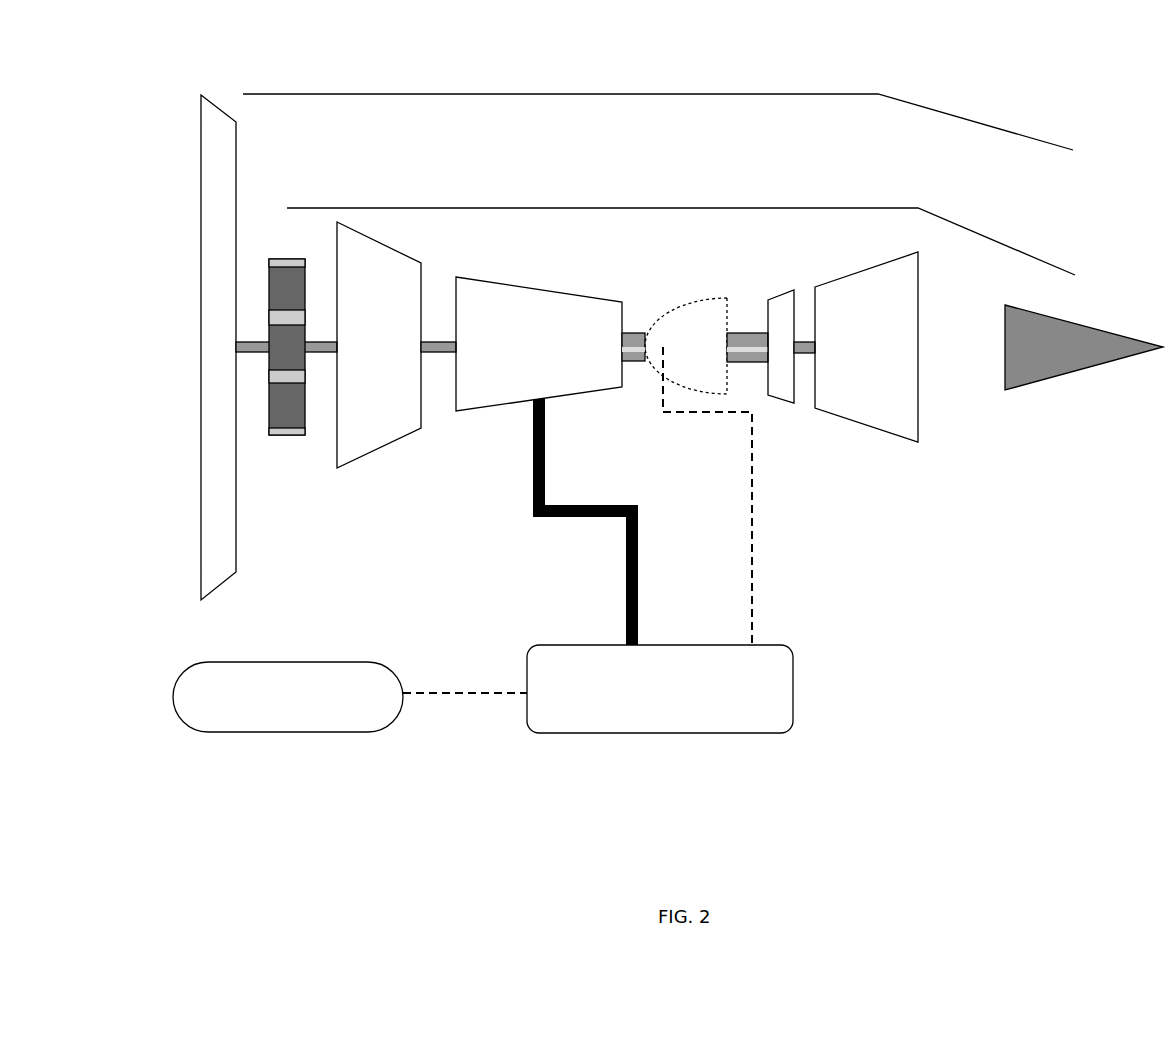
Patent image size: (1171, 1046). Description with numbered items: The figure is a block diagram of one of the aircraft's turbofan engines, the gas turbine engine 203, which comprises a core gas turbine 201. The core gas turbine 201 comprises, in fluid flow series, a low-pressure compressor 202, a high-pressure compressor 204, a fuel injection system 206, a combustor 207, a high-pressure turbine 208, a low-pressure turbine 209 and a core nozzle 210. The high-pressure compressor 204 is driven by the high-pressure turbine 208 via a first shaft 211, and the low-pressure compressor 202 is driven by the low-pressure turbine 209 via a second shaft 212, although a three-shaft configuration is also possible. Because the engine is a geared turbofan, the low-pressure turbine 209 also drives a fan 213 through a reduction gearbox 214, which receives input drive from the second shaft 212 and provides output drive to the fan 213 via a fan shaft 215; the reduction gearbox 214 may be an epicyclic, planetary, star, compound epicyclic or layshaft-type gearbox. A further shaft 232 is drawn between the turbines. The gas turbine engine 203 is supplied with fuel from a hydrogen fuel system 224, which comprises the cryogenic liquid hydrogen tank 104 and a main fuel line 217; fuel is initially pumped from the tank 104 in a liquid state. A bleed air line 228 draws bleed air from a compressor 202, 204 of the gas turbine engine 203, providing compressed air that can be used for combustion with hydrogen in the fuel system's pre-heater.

The cryogenic liquid hydrogen tank 104 is at (287, 731).
The core gas turbine 201 is at (750, 233).
The low-pressure compressor 202 is at (402, 253).
The gas turbine engine 203 is at (493, 76).
The high-pressure compressor 204 is at (505, 280).
The fuel injection system 206 is at (660, 372).
The combustor 207 is at (730, 318).
The high-pressure turbine 208 is at (780, 402).
The low-pressure turbine 209 is at (887, 435).
The core nozzle 210 is at (1058, 296).
The first shaft 211 is at (637, 328).
The second shaft 212 is at (432, 342).
The fan 213 is at (236, 171).
The reduction gearbox 214 is at (285, 435).
The fan shaft 215 is at (253, 358).
The main fuel line 217 is at (750, 492).
The hydrogen fuel system 224 is at (648, 733).
The bleed air line 228 is at (533, 502).
The turbine shaft 232 is at (825, 423).